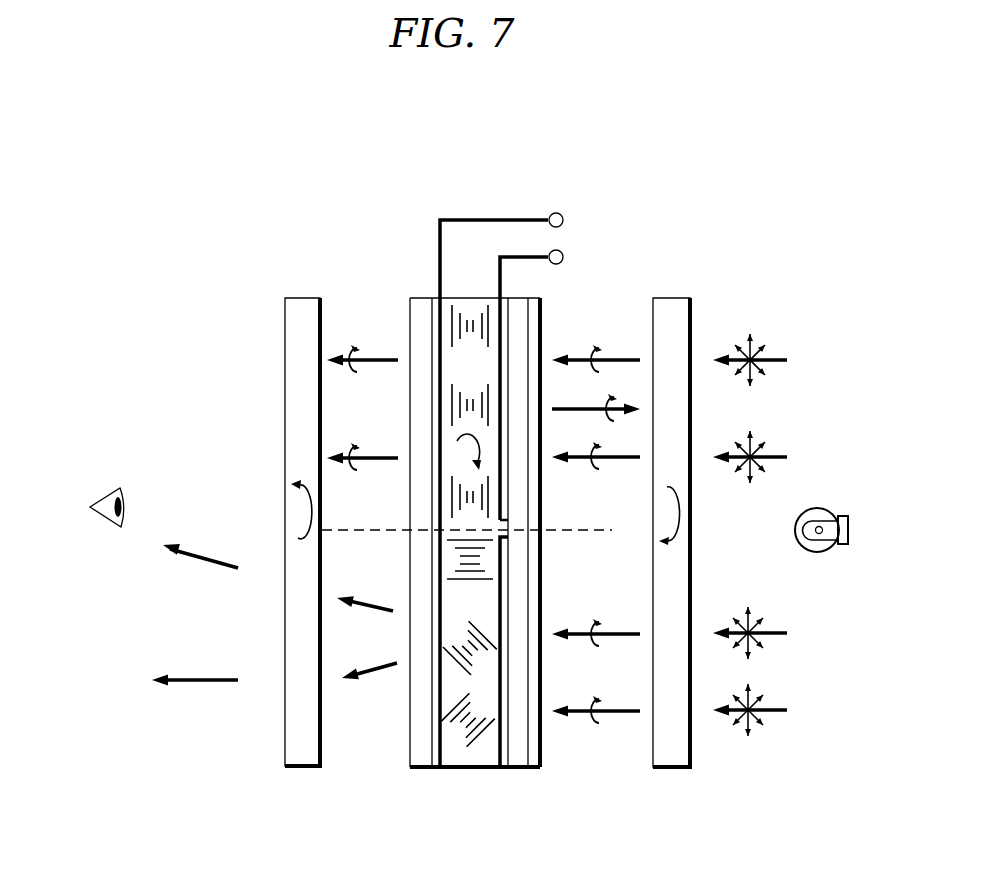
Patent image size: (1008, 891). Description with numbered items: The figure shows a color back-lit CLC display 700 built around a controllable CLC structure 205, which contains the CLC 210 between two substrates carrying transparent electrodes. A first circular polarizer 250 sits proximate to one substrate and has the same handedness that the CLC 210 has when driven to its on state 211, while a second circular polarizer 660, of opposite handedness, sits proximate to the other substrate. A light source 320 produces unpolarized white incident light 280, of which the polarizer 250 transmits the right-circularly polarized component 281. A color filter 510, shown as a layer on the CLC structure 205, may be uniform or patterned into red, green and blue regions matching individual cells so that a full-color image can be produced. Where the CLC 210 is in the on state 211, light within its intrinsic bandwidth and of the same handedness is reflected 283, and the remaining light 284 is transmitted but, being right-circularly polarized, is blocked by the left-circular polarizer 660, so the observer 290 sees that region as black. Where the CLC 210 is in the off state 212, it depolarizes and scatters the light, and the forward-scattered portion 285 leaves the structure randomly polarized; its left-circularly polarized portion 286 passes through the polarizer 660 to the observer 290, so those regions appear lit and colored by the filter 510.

The color back-lit CLC display 700 is at (434, 99).
The second circular polarizer 660 is at (305, 296).
The first circular polarizer 250 is at (677, 296).
The controllable CLC structure 205 is at (528, 812).
The color filter 510 is at (528, 767).
The CLC 210 is at (468, 297).
The on state 211 is at (453, 379).
The off state 212 is at (453, 617).
The incident light 280 is at (772, 359).
The right-circularly polarized component 281 is at (618, 357).
The reflected light 283 is at (578, 406).
The transmitted light 284 is at (381, 364).
The forward-scattered light 285 is at (362, 614).
The left-circularly polarized portion 286 is at (217, 570).
The observer 290 is at (104, 516).
The light source 320 is at (835, 511).